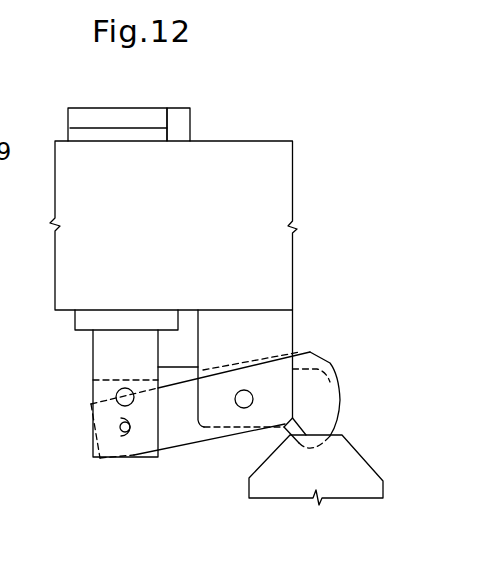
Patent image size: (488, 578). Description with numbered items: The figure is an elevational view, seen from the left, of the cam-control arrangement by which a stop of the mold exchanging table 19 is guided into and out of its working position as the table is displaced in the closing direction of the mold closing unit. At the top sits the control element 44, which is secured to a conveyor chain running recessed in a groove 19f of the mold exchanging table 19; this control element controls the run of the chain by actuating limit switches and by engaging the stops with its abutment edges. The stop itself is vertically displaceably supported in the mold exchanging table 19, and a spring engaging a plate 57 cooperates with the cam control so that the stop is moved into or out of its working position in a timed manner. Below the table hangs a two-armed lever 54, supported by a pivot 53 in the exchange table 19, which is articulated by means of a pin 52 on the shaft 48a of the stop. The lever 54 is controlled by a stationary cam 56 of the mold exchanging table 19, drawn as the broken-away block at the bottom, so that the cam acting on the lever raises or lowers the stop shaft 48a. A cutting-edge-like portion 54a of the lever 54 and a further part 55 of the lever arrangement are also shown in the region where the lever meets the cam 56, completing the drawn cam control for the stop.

The mold exchanging table 19 is at (248, 141).
The groove 19f is at (260, 328).
The control element 44 is at (97, 107).
The shaft of stop 48a is at (123, 353).
The pin 52 is at (118, 430).
The pivot 53 is at (244, 400).
The lever 54 is at (318, 385).
The cutting edge of insert 54a is at (340, 436).
The clamp bar 55 is at (310, 352).
The cam 56 is at (315, 470).
The plate 57 is at (96, 322).